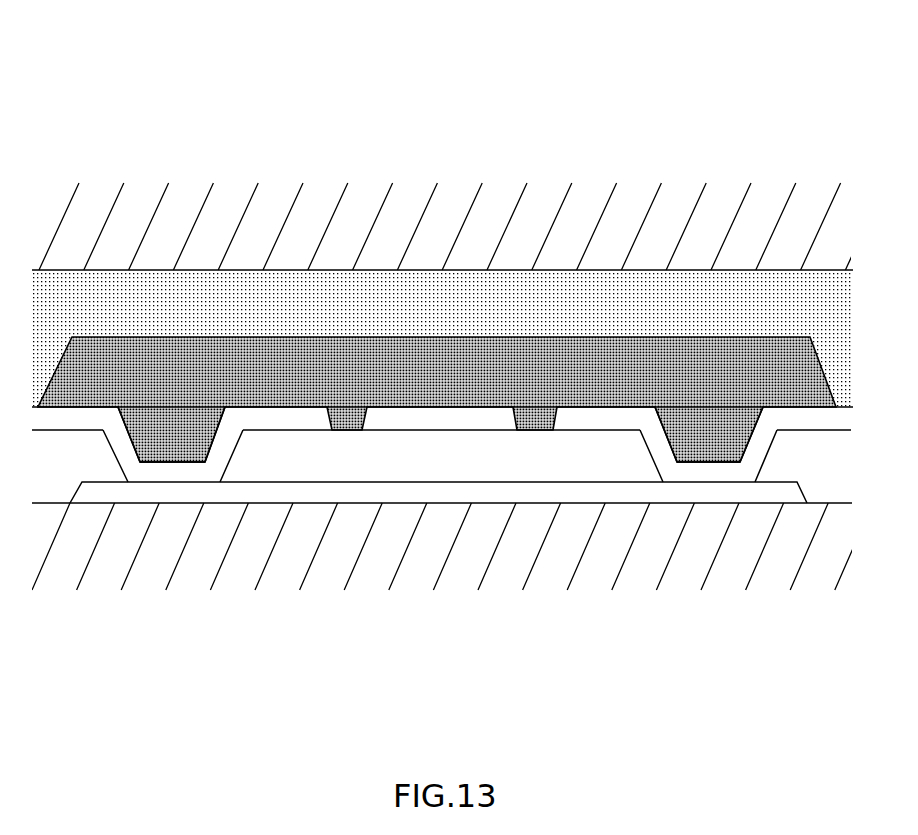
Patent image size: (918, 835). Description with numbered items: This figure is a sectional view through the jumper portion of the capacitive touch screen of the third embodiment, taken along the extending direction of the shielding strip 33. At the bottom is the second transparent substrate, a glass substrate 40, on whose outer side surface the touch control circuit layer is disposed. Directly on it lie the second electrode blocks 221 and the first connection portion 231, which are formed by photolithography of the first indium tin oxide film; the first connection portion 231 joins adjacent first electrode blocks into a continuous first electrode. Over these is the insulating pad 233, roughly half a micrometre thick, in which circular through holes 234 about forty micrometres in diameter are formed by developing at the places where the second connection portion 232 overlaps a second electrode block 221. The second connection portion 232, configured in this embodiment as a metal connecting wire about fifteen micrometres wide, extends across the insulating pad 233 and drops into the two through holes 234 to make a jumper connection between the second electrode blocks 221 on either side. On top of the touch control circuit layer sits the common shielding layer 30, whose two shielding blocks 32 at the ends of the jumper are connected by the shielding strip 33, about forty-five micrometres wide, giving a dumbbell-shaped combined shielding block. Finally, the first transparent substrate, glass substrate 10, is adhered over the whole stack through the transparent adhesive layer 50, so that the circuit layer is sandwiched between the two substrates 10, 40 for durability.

The glass substrate 10 is at (372, 233).
The transparent adhesive layer 50 is at (303, 318).
The shielding block 32 is at (442, 234).
The shielding strip 33 is at (227, 363).
The shielding layer 30 is at (735, 365).
The through hole 234 is at (172, 437).
The first connection portion 231 is at (487, 418).
The second electrode block 221 is at (182, 467).
The insulating pad 233 is at (272, 462).
The second connection portion 232 is at (368, 497).
The glass substrate 40 is at (448, 557).